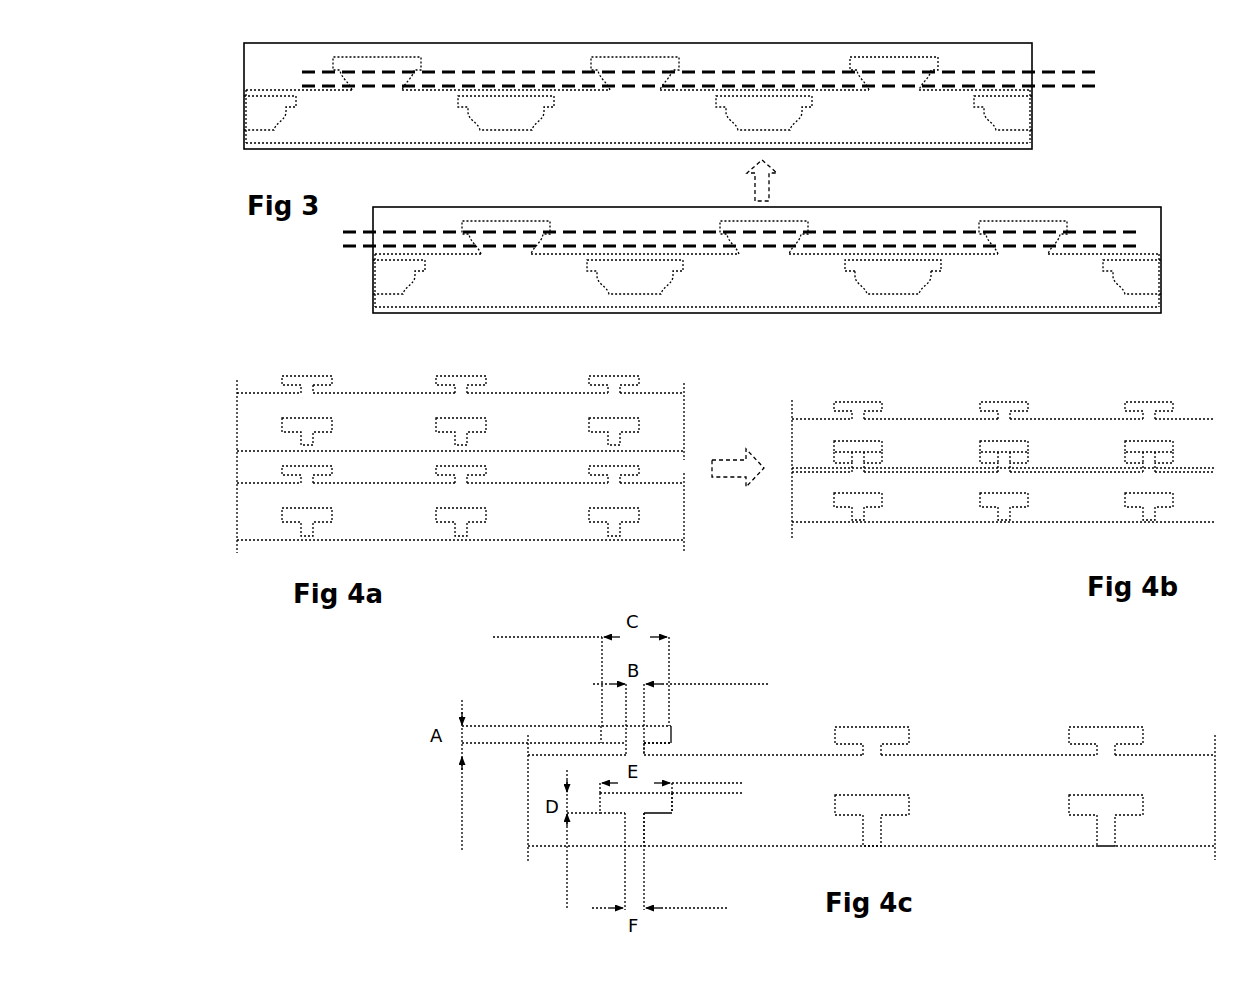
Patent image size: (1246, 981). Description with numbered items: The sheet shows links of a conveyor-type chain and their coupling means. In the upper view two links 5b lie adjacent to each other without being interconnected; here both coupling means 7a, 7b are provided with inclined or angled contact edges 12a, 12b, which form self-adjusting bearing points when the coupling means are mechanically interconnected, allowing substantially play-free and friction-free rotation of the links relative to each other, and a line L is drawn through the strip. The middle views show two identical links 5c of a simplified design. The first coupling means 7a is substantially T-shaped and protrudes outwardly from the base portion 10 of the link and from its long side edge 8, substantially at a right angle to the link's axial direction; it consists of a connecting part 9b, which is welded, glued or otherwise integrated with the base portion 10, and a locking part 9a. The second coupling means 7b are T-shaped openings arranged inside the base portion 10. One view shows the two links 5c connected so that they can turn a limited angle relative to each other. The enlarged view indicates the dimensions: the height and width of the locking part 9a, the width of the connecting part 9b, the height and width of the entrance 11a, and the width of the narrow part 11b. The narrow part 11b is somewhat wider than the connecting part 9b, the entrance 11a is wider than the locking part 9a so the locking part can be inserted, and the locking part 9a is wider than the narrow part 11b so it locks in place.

In FIG. 3, the link 5b is at (641, 129).
In FIG. 4A, the link 5c is at (546, 435).
In FIG. 4B, the link 5c is at (945, 456).
In FIG. 4C, the link 5c is at (966, 746).
In FIG. 3, the first coupling means 7a is at (898, 55).
In FIG. 4A, the first coupling means 7a is at (310, 382).
In FIG. 4C, the first coupling means 7a is at (622, 696).
In FIG. 3, the second coupling means 7b is at (887, 266).
In FIG. 4A, the second coupling means 7b is at (302, 415).
In FIG. 4C, the second coupling means 7b is at (648, 849).
In FIG. 4A, the long side edge 8 is at (360, 392).
In FIG. 4A, the locking part 9a is at (320, 378).
In FIG. 4C, the locking part 9a is at (672, 742).
In FIG. 4A, the connecting part 9b is at (308, 390).
In FIG. 4C, the connecting part 9b is at (648, 752).
In FIG. 4A, the base portion 10 is at (401, 388).
In FIG. 4C, the entrance 11a is at (676, 805).
In FIG. 4C, the narrow part 11b is at (652, 826).
In FIG. 3, the contact edge 12a is at (920, 80).
In FIG. 3, the contact edge 12b is at (870, 285).
In FIG. 3, the cutting line L is at (1090, 88).